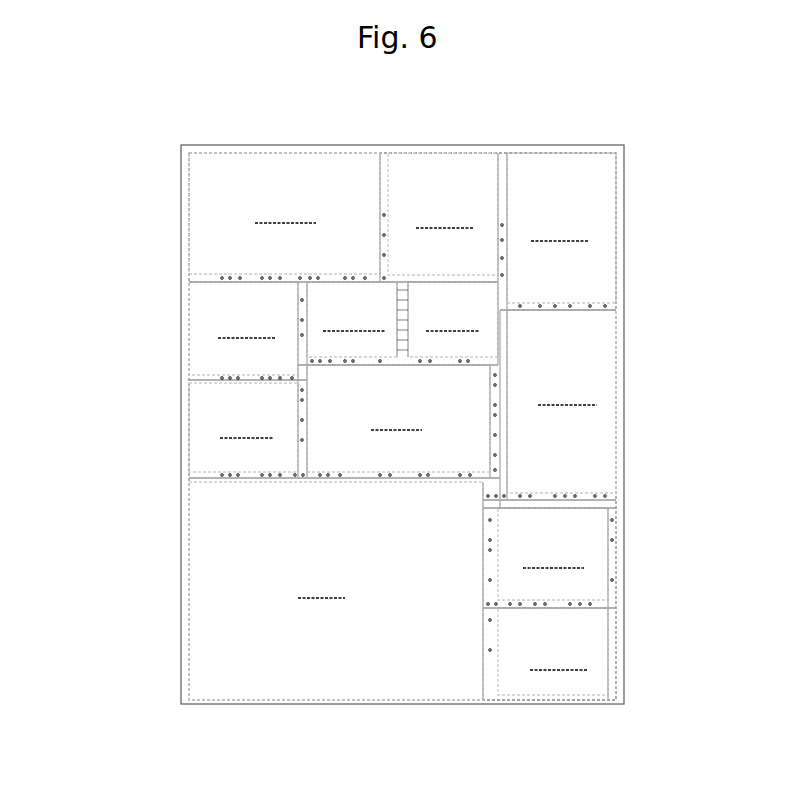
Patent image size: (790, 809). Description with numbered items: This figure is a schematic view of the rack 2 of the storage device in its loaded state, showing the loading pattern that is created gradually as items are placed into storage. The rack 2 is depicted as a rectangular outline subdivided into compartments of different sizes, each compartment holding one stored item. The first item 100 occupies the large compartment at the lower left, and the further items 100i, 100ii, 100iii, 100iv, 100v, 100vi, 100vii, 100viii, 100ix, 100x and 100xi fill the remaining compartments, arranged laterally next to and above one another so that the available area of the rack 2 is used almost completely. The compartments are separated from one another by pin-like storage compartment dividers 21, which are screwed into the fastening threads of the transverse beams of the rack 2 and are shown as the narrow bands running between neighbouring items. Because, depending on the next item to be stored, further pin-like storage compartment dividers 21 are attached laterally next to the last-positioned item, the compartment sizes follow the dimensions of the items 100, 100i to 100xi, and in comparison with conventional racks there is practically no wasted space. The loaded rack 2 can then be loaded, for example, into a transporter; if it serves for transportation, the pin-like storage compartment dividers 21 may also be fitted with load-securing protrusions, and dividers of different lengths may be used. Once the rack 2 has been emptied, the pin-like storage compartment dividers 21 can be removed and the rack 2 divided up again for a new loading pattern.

The rack 2 is at (256, 118).
The pin-like storage compartment divider 21 is at (349, 262).
The item 100 is at (336, 591).
The item 100i is at (398, 418).
The item 100ii is at (553, 651).
The item 100iii is at (553, 554).
The item 100iv is at (243, 328).
The item 100v is at (243, 427).
The item 100vi is at (561, 401).
The item 100vii is at (284, 213).
The item 100viii is at (352, 319).
The item 100ix is at (561, 228).
The item 100x is at (453, 319).
The item 100xi is at (443, 214).